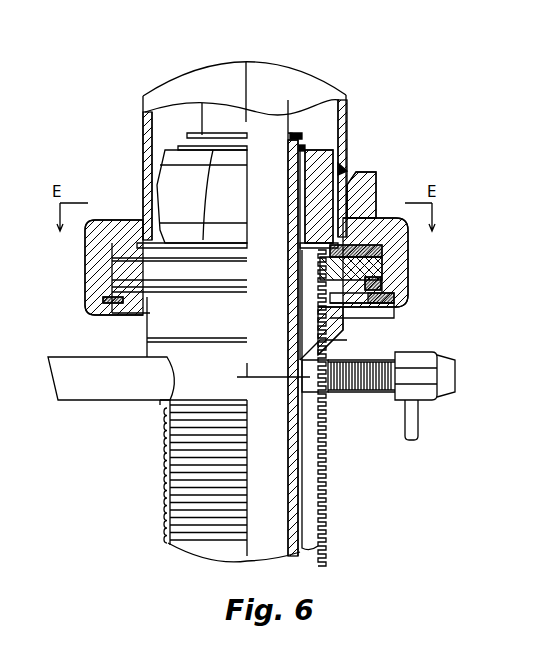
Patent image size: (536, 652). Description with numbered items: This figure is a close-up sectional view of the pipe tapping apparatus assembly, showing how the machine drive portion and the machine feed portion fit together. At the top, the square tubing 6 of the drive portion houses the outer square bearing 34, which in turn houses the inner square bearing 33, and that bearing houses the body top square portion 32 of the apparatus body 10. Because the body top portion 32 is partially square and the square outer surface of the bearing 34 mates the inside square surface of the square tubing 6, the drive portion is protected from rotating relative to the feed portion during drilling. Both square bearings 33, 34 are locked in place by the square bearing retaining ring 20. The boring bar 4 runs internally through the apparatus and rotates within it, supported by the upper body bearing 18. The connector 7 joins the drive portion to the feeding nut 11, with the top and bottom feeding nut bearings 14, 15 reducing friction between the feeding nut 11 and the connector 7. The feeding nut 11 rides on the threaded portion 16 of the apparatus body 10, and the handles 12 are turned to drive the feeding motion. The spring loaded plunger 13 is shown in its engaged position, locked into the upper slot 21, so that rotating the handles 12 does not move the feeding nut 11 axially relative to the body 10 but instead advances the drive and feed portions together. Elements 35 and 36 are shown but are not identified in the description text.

The boring bar 4 is at (218, 118).
The square tubing 6 is at (148, 152).
The connector 7 is at (97, 290).
The apparatus body 10 is at (196, 432).
The feeding nut 11 is at (165, 324).
The handles 12 is at (110, 378).
The spring loaded plunger 13 is at (415, 385).
The top feeding nut bearing 14 is at (380, 251).
The bottom feeding nut bearing 15 is at (383, 287).
The threaded portion 16 is at (168, 520).
The upper body bearing 18 is at (304, 150).
The square bearing retaining ring 20 is at (320, 172).
The upper slot 21 is at (326, 476).
The body top square portion 32 is at (343, 167).
The inner square bearing 33 is at (356, 184).
The outer square bearing 34 is at (180, 192).
The inner sleeve 35 is at (296, 140).
The washer 36 is at (396, 304).